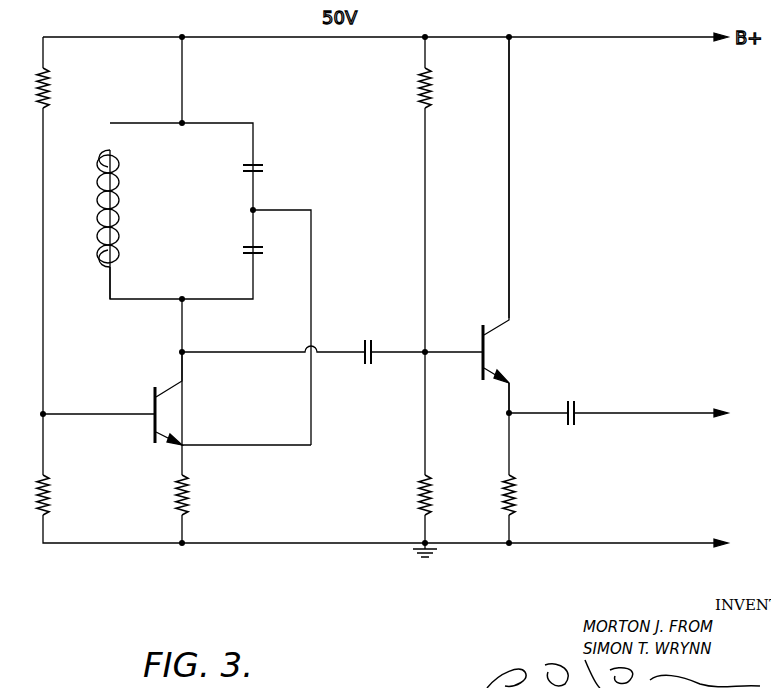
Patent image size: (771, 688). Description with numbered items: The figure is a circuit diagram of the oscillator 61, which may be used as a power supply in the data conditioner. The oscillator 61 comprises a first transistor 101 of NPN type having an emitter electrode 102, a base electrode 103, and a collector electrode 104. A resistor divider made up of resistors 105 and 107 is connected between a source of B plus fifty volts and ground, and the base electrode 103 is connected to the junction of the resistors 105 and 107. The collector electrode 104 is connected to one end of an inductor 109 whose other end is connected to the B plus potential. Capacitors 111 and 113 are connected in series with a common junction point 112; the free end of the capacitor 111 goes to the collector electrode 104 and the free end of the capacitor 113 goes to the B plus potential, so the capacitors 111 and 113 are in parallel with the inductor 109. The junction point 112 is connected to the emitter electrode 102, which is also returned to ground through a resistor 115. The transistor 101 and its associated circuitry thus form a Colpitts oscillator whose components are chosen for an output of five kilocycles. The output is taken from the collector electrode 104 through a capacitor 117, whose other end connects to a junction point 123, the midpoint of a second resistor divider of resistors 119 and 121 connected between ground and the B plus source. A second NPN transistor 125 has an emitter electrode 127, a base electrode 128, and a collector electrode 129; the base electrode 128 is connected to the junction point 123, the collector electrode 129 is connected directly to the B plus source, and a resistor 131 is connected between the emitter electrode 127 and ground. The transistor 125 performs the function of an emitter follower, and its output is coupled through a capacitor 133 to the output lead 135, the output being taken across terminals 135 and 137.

The oscillator 61 is at (275, 128).
The first transistor 101 is at (177, 410).
The emitter electrode 102 is at (163, 448).
The base electrode 103 is at (98, 411).
The collector electrode 104 is at (162, 375).
The resistor 105 is at (50, 485).
The resistor 107 is at (50, 80).
The inductor 109 is at (120, 201).
The capacitor 111 is at (241, 250).
The junction point 112 is at (258, 207).
The capacitor 113 is at (266, 167).
The resistor 115 is at (189, 485).
The capacitor 117 is at (367, 334).
The resistor 119 is at (418, 484).
The resistor 121 is at (432, 80).
The junction point 123 is at (432, 346).
The transistor 125 is at (485, 225).
The emitter electrode 127 is at (490, 382).
The base electrode 128 is at (470, 366).
The collector electrode 129 is at (495, 314).
The resistor 131 is at (516, 485).
The capacitor 133 is at (578, 386).
The output lead 135 is at (741, 413).
The terminal 137 is at (741, 543).